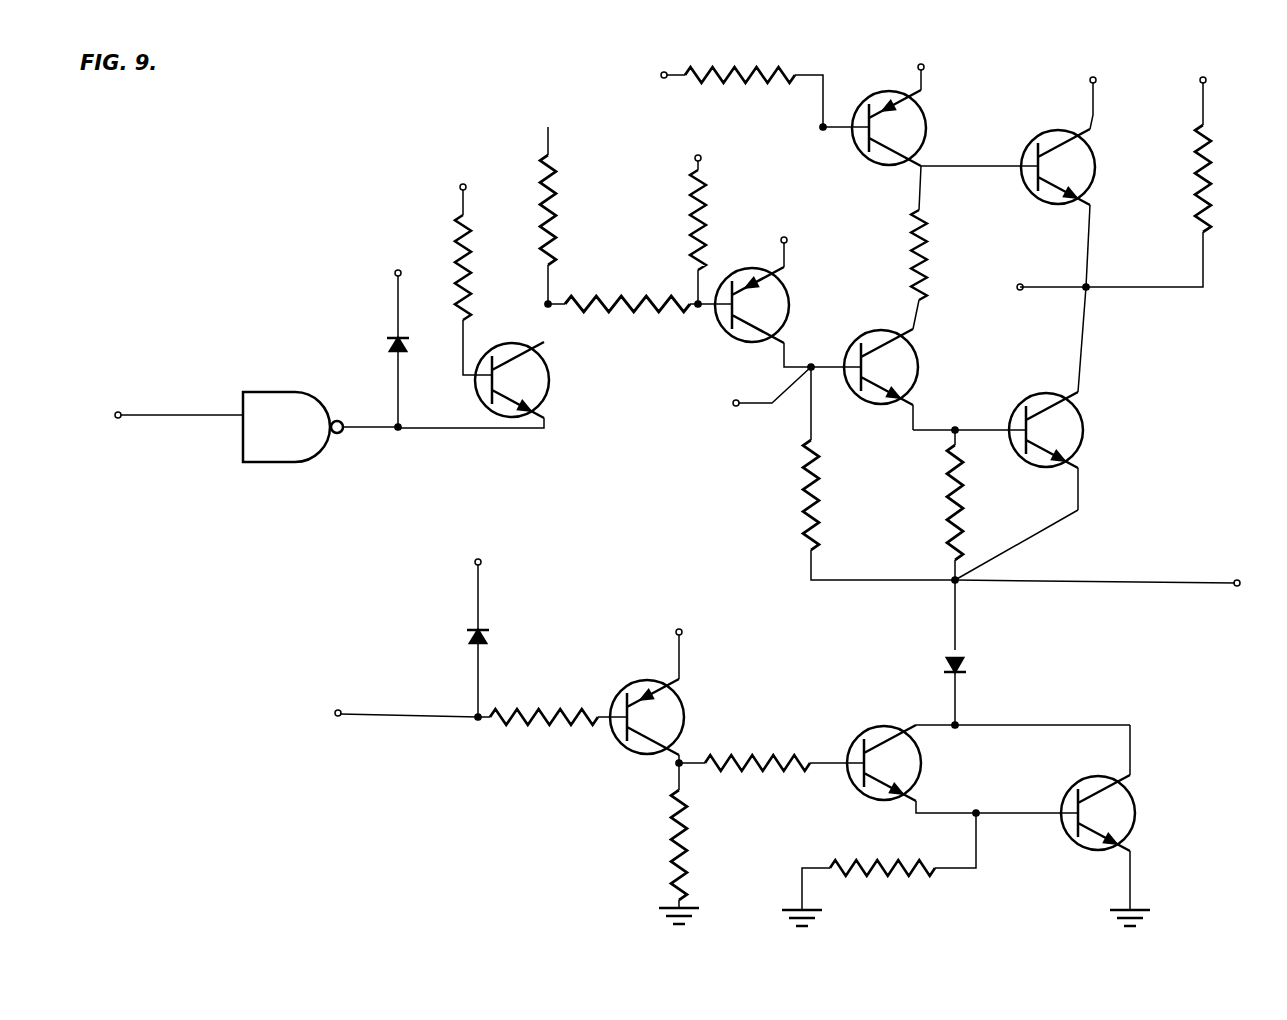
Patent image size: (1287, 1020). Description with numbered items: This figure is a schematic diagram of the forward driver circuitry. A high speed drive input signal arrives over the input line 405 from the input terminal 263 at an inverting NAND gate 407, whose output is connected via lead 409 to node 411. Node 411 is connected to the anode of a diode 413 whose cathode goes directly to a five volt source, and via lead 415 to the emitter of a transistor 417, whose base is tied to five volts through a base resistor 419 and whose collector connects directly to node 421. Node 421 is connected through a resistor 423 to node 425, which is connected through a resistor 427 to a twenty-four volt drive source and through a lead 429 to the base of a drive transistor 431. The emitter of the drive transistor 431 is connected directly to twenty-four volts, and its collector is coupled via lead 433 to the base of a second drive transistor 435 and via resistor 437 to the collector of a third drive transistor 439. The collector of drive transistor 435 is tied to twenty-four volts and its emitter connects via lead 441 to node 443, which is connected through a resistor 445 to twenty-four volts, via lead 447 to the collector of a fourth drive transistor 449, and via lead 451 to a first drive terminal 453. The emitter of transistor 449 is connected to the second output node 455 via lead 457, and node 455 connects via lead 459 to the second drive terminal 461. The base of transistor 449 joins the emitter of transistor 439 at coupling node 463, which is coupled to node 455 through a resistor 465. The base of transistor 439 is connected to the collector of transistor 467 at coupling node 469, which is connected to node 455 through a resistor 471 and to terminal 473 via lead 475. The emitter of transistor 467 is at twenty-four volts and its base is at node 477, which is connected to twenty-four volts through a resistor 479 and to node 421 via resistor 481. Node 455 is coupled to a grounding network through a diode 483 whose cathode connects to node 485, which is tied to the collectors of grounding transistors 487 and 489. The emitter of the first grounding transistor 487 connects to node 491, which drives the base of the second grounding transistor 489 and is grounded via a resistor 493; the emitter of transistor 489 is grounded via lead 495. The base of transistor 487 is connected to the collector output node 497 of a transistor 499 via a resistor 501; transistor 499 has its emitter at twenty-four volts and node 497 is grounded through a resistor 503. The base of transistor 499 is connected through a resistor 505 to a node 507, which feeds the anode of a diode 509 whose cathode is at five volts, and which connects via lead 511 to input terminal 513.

The input terminal 263 is at (118, 414).
The input line 405 is at (182, 414).
The inverting NAND gate 407 is at (291, 390).
The lead 409 is at (372, 426).
The node 411 is at (398, 430).
The diode 413 is at (392, 339).
The lead 415 is at (465, 430).
The transistor 417 is at (549, 400).
The base resistor 419 is at (470, 290).
The node 421 is at (550, 302).
The resistor 423 is at (556, 180).
The node 425 is at (823, 130).
The resistor 427 is at (720, 50).
The lead 429 is at (845, 130).
The drive transistor 431 is at (928, 112).
The lead 433 is at (975, 168).
The second drive transistor 435 is at (1093, 152).
The resistor 437 is at (925, 262).
The third drive transistor 439 is at (920, 362).
The lead 441 is at (1088, 245).
The node 443 is at (1088, 289).
The resistor 445 is at (1196, 180).
The lead 447 is at (1088, 386).
The fourth drive transistor 449 is at (1085, 454).
The lead 451 is at (1054, 290).
The first drive terminal 453 is at (1019, 290).
The second output node 455 is at (952, 581).
The lead 457 is at (1020, 544).
The lead 459 is at (1099, 583).
The second drive terminal 461 is at (1240, 584).
The coupling node 463 is at (957, 426).
The resistor 465 is at (948, 497).
The transistor 467 is at (792, 300).
The coupling node 469 is at (812, 364).
The resistor 471 is at (805, 500).
The terminal 473 is at (733, 402).
The lead 475 is at (790, 390).
The node 477 is at (698, 307).
The resistor 479 is at (690, 215).
The resistor 481 is at (605, 308).
The diode 483 is at (946, 670).
The node 485 is at (958, 722).
The first grounding transistor 487 is at (870, 730).
The second grounding transistor 489 is at (1135, 790).
The node 491 is at (976, 810).
The resistor 493 is at (875, 860).
The lead 495 is at (1125, 880).
The collector output node 497 is at (681, 760).
The transistor 499 is at (640, 690).
The resistor 501 is at (790, 760).
The resistor 503 is at (672, 835).
The resistor 505 is at (540, 720).
The node 507 is at (476, 720).
The diode 509 is at (470, 634).
The lead 511 is at (405, 688).
The input terminal 513 is at (336, 716).